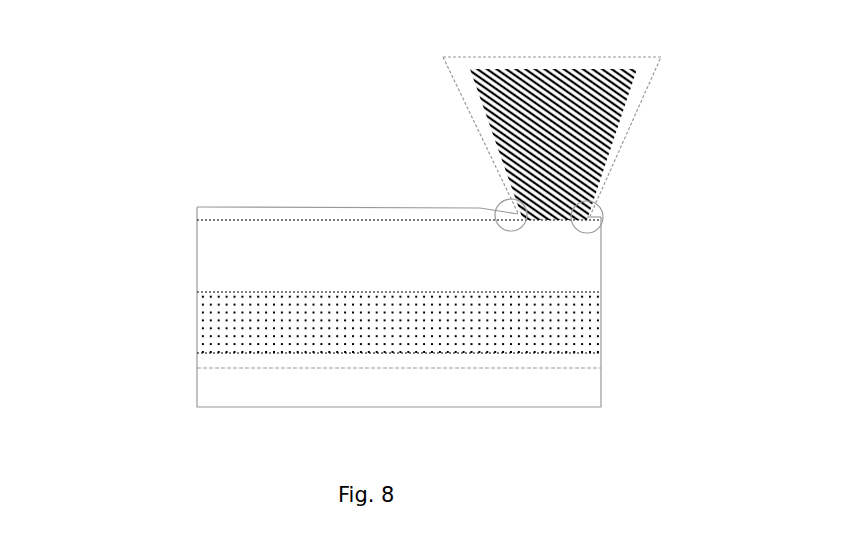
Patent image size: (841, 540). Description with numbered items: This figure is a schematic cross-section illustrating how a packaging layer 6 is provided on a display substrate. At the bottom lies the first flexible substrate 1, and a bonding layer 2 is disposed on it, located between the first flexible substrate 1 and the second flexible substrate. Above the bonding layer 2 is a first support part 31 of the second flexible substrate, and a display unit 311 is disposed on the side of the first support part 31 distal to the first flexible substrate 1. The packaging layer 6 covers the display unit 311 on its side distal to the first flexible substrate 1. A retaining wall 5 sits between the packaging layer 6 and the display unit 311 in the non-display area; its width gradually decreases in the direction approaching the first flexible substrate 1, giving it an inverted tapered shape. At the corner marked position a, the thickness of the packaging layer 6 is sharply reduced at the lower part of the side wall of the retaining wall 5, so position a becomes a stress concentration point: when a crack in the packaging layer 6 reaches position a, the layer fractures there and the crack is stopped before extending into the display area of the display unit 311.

The first flexible substrate 1 is at (197, 385).
The bonding layer 2 is at (197, 357).
The first support part 31 is at (197, 312).
The display unit 311 is at (197, 253).
The packaging layer 6 is at (345, 207).
The retaining wall 5 is at (548, 68).
The position a is at (488, 187).